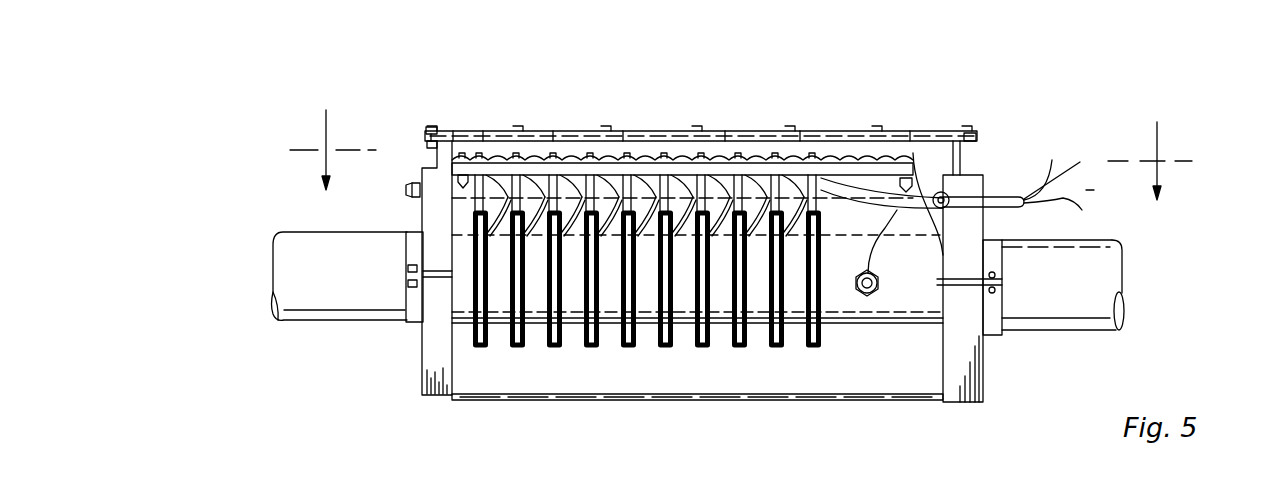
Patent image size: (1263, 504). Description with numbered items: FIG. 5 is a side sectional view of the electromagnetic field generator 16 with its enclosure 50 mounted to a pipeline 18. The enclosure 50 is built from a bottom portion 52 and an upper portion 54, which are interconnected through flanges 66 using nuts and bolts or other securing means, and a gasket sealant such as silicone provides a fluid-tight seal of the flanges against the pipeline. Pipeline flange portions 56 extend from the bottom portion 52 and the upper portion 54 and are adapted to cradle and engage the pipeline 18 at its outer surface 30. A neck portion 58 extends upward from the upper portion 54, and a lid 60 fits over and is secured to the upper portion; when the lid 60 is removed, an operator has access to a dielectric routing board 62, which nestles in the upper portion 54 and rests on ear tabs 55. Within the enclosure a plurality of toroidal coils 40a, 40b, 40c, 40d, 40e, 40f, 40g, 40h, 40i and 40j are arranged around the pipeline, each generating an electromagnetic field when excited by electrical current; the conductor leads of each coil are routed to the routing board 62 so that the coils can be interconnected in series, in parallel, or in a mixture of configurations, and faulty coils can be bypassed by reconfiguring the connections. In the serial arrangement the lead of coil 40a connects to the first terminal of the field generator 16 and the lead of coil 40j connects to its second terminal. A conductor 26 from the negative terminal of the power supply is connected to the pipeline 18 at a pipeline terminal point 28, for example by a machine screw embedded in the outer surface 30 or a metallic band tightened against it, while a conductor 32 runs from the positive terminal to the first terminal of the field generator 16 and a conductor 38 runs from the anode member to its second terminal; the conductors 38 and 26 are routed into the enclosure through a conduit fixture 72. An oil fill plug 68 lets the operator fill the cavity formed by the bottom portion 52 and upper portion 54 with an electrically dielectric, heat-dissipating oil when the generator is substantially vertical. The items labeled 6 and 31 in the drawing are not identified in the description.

The section line 6- 6 is at (741, 155).
The electromagnetic field generator 16 is at (488, 100).
The pipeline 18 is at (1103, 255).
The conductor 26 is at (868, 273).
The pipeline terminal point 28 is at (869, 295).
The outer surface 30 is at (1090, 290).
The pipe end 31 is at (1122, 313).
The conductor 32 is at (862, 195).
The conductor 38 is at (570, 200).
The toroidal coil 40a is at (479, 348).
The toroidal coil 40b is at (516, 348).
The toroidal coil 40c is at (553, 348).
The toroidal coil 40d is at (590, 348).
The toroidal coil 40e is at (627, 348).
The toroidal coil 40f is at (668, 348).
The toroidal coil 40g is at (705, 348).
The toroidal coil 40h is at (742, 348).
The toroidal coil 40i is at (779, 348).
The toroidal coil 40j is at (820, 348).
The enclosure 50 is at (416, 372).
The bottom portion 52 is at (427, 347).
The upper portion 54 is at (432, 215).
The ear tabs 55 is at (466, 177).
The pipeline flange portions 56 is at (410, 307).
The neck portion 58 is at (431, 148).
The lid 60 is at (462, 132).
The dielectric routing board 62 is at (757, 178).
The flanges 66 is at (967, 282).
The oil fill plug 68 is at (405, 190).
The conduit fixture 72 is at (1010, 194).